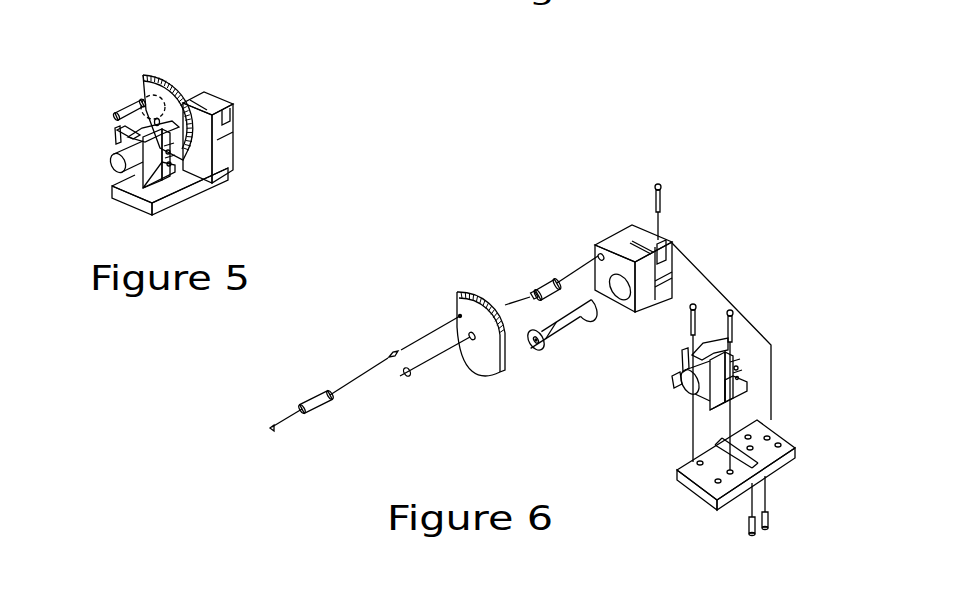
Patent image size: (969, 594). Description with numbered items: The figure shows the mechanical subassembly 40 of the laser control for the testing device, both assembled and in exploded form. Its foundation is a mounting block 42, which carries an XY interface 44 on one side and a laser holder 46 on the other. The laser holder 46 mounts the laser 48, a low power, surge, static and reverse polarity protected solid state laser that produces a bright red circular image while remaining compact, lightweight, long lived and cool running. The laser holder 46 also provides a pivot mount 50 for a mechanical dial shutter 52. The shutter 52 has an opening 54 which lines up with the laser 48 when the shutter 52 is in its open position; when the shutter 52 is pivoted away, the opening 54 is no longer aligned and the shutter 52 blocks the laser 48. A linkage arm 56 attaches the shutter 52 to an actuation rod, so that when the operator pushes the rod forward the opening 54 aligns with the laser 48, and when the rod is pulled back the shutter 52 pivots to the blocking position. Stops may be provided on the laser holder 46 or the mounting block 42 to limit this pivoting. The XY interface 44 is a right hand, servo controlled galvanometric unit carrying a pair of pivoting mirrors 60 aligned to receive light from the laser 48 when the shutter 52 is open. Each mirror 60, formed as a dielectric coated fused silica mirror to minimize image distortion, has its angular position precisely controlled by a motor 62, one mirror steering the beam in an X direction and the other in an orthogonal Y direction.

In FIG. 5, the mechanical subassembly 40 is at (268, 62).
In FIG. 6, the mechanical subassembly 40 is at (771, 290).
In FIG. 5, the mounting block 42 is at (202, 180).
In FIG. 6, the mounting block 42 is at (787, 462).
In FIG. 5, the XY interface 44 is at (148, 191).
In FIG. 6, the XY interface 44 is at (686, 405).
In FIG. 5, the laser holder 46 is at (194, 92).
In FIG. 6, the laser holder 46 is at (620, 232).
In FIG. 5, the laser 48 is at (233, 127).
In FIG. 6, the laser 48 is at (556, 341).
In FIG. 5, the pivot mount 50 is at (129, 109).
In FIG. 6, the pivot mount 50 is at (545, 284).
In FIG. 5, the mechanical dial shutter 52 is at (138, 78).
In FIG. 6, the mechanical dial shutter 52 is at (457, 290).
In FIG. 5, the opening 54 is at (178, 152).
In FIG. 6, the opening 54 is at (490, 366).
In FIG. 6, the linkage arm 56 is at (315, 403).
In FIG. 5, the pivoting mirrors 60 is at (172, 160).
In FIG. 6, the pivoting mirrors 60 is at (740, 362).
In FIG. 5, the motor 62 is at (120, 138).
In FIG. 6, the motor 62 is at (690, 350).